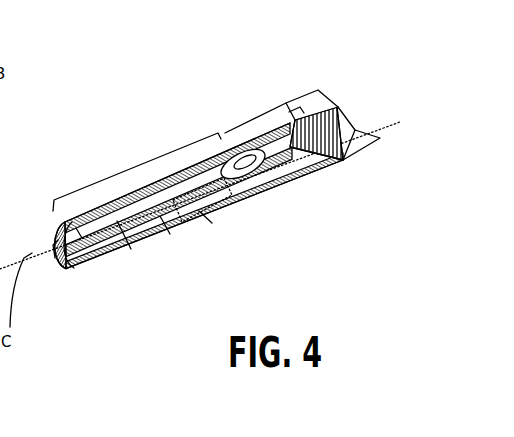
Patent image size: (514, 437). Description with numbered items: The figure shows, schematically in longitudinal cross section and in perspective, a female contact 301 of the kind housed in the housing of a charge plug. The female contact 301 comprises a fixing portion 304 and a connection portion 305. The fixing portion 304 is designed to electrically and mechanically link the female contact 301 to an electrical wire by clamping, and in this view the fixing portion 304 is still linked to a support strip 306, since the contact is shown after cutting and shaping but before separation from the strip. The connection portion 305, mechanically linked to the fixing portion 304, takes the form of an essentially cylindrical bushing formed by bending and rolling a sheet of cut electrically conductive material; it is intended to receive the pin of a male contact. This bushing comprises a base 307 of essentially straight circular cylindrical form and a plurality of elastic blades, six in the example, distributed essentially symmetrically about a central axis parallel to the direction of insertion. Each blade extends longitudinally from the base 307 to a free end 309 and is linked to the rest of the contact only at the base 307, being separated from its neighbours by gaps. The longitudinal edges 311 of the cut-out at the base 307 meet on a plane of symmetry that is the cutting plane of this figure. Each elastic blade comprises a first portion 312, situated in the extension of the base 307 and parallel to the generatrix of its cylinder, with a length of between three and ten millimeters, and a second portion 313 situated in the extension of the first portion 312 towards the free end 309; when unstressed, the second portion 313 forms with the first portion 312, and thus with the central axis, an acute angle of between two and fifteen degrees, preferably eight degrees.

The female contact 301 is at (204, 119).
The fixing portion 304 is at (292, 111).
The connection portion 305 is at (137, 172).
The support strip 306 is at (355, 130).
The base 307 is at (202, 215).
The free end 309 is at (63, 284).
The longitudinal edges 311 is at (81, 236).
The first portion 312 is at (163, 226).
The second portion 313 is at (114, 238).